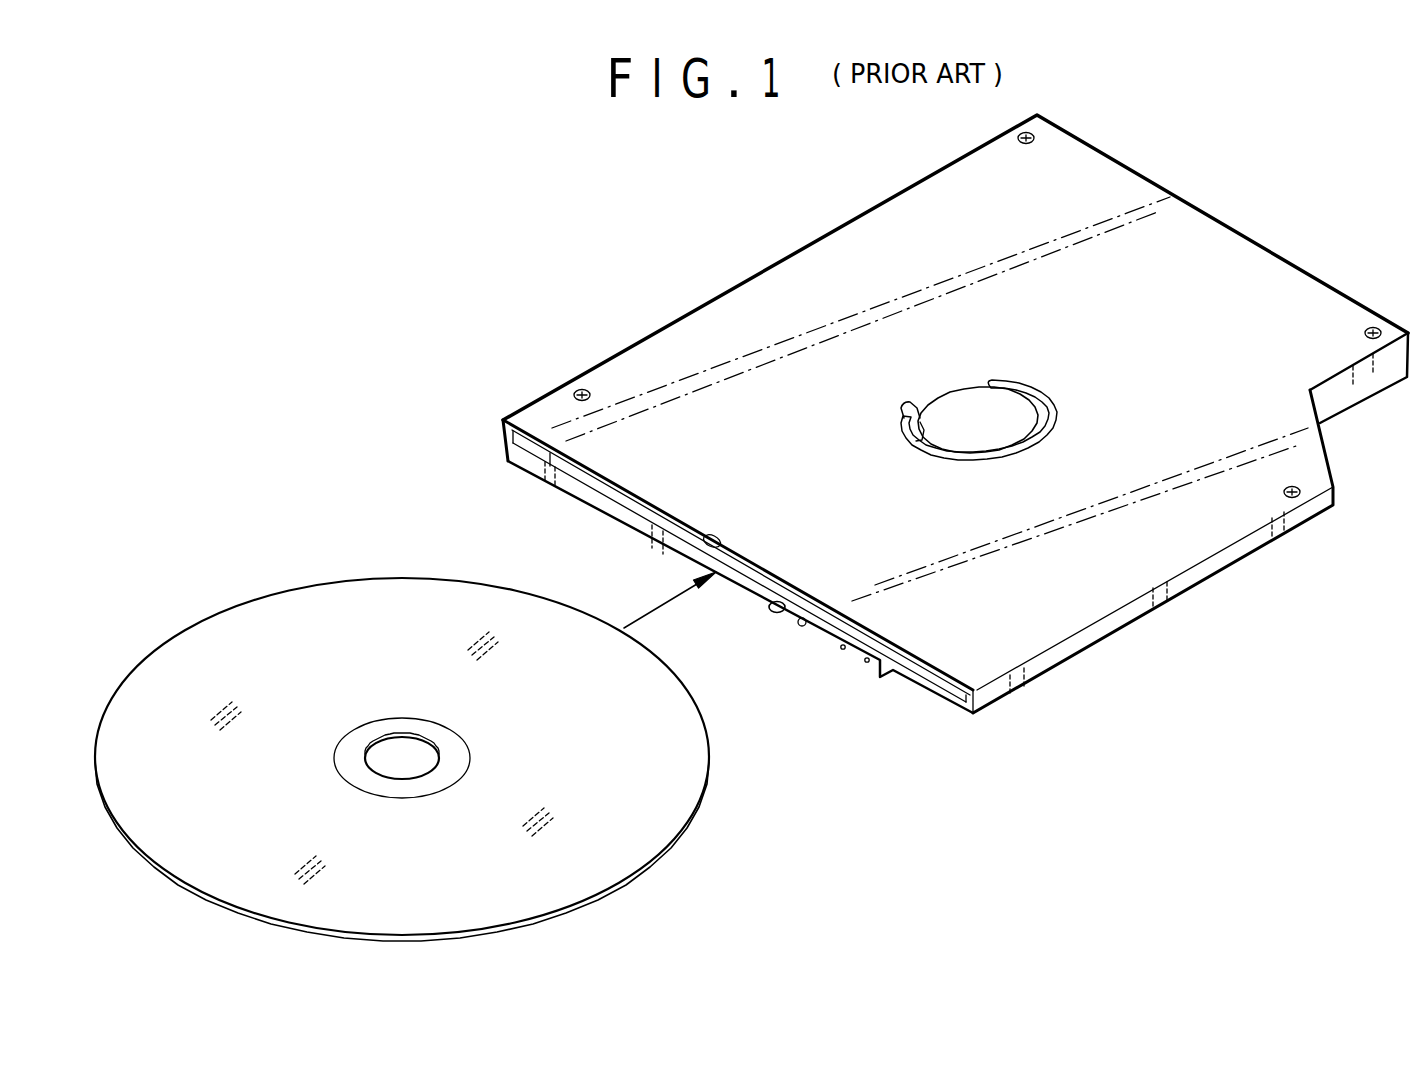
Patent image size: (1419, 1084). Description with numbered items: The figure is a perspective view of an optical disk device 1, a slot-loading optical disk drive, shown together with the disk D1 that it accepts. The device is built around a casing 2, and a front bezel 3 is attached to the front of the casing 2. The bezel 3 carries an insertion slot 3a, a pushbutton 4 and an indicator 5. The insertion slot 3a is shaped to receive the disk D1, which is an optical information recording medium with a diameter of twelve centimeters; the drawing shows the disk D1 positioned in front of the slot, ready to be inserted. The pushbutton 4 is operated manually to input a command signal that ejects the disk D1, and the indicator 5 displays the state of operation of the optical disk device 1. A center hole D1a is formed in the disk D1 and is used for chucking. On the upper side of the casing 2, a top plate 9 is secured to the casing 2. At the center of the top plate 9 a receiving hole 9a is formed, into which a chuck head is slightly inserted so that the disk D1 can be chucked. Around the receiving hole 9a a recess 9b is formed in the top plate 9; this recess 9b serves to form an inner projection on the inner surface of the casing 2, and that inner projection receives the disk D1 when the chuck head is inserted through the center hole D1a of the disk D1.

The optical disk device 1 is at (928, 448).
The casing 2 is at (1221, 250).
The front bezel 3 is at (710, 568).
The insertion slot 3a is at (708, 540).
The pushbutton 4 is at (775, 614).
The indicator 5 is at (801, 630).
The top plate 9 is at (803, 278).
The receiving hole 9a is at (920, 428).
The recess 9b is at (1035, 390).
The disk D1 is at (435, 759).
The center hole D1a is at (380, 746).